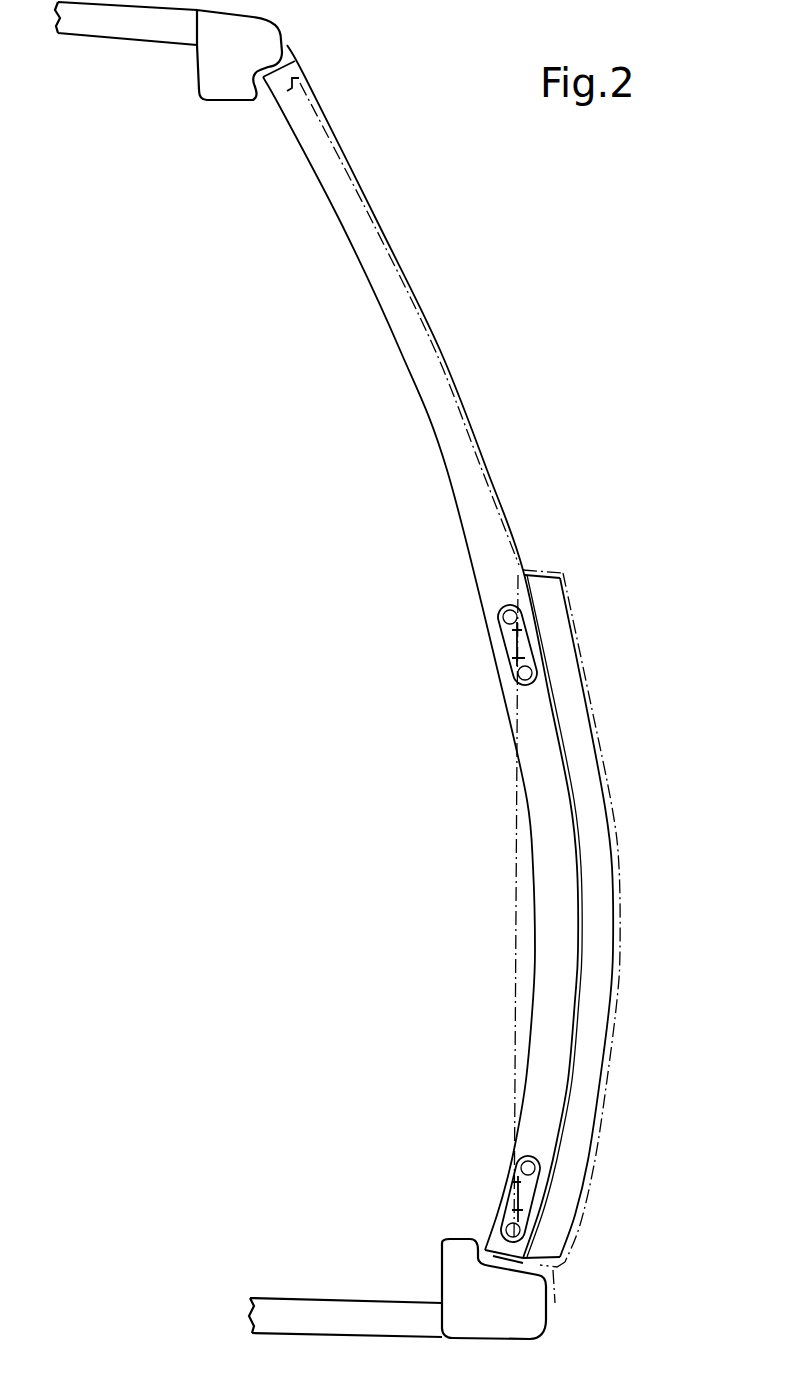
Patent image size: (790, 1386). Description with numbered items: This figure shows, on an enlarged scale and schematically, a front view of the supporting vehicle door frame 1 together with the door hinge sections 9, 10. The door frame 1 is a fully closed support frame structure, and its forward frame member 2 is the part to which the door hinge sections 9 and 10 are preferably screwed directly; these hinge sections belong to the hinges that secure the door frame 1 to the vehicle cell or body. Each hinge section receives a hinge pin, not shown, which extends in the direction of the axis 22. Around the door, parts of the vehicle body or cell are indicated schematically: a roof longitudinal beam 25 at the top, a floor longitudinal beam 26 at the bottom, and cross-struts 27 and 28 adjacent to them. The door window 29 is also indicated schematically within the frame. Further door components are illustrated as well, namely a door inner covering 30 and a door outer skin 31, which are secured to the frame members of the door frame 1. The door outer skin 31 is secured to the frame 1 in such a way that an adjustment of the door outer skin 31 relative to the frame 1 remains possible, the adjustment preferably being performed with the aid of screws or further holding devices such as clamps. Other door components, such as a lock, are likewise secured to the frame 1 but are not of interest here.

The door frame 1 is at (453, 378).
The forward frame member 2 is at (547, 863).
The door hinge section 9 is at (427, 674).
The door hinge section 10 is at (504, 1202).
The axis 22 is at (510, 643).
The roof longitudinal beam 25 is at (227, 83).
The floor longitudinal beam 26 is at (520, 1313).
The cross-strut 27 is at (140, 30).
The cross-strut 28 is at (282, 1319).
The door window 29 is at (383, 260).
The door inner covering 30 is at (508, 652).
The door outer skin 31 is at (613, 803).